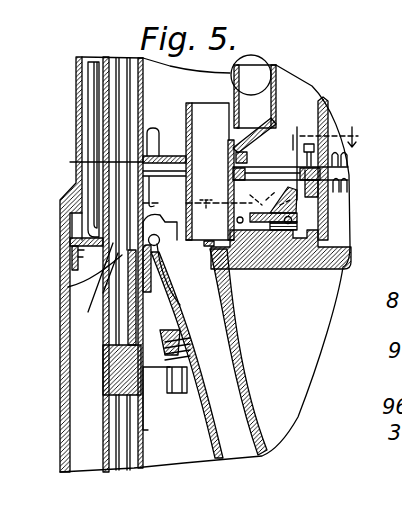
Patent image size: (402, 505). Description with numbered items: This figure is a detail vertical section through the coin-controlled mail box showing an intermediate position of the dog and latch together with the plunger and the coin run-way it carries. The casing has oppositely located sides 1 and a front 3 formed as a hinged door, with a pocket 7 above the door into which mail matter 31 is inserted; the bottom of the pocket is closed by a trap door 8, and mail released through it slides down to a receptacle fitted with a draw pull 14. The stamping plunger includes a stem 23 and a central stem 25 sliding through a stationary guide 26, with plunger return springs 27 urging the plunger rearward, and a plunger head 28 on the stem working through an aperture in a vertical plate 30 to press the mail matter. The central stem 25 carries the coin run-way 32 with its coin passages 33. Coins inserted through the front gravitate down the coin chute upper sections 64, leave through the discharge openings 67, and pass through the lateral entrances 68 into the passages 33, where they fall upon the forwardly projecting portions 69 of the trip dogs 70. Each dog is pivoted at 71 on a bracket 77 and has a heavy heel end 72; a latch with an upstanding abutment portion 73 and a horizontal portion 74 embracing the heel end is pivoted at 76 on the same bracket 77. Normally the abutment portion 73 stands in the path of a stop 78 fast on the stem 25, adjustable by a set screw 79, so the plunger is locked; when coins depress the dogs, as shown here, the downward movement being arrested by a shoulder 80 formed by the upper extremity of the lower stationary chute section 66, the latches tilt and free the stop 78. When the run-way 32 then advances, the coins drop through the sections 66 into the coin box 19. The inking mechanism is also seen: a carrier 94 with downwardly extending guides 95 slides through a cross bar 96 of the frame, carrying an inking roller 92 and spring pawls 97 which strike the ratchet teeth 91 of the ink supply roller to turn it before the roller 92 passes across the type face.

The sides 1 is at (313, 352).
The front 3 is at (58, 382).
The pocket 7 is at (77, 130).
The trap door 8 is at (68, 253).
The draw pull 14 is at (267, 170).
The coin box 19 is at (252, 76).
The plunger stem 23 is at (151, 133).
The plunger stem 25 is at (283, 136).
The stationary guide 26 is at (320, 99).
The plunger return springs 27 is at (344, 185).
The plunger head 28 is at (82, 163).
The plate 30 is at (145, 69).
The mail matter 31 is at (92, 98).
The coin run-way 32 is at (187, 120).
The coin passages 33 is at (207, 118).
The coin chute upper sections 64 is at (276, 95).
The lower stationary chute sections 66 is at (244, 388).
The discharge openings 67 is at (238, 65).
The lateral entrances 68 is at (233, 128).
The forwardly projecting portions 69 is at (213, 192).
The trip dogs 70 is at (237, 262).
The pivot 71 is at (247, 262).
The heel ends 72 is at (264, 262).
The abutment portion 73 is at (331, 210).
The horizontal portion 74 is at (271, 185).
The latch pivot 76 is at (294, 222).
The bracket 77 is at (293, 245).
The stop 78 is at (297, 127).
The set screw 79 is at (309, 144).
The shoulder 80 is at (208, 247).
The ratchet teeth 91 is at (178, 304).
The inking roller 92 is at (133, 305).
The carrier 94 is at (68, 287).
The guides 95 is at (103, 355).
The cross bar 96 is at (96, 368).
The spring pawls 97 is at (112, 305).